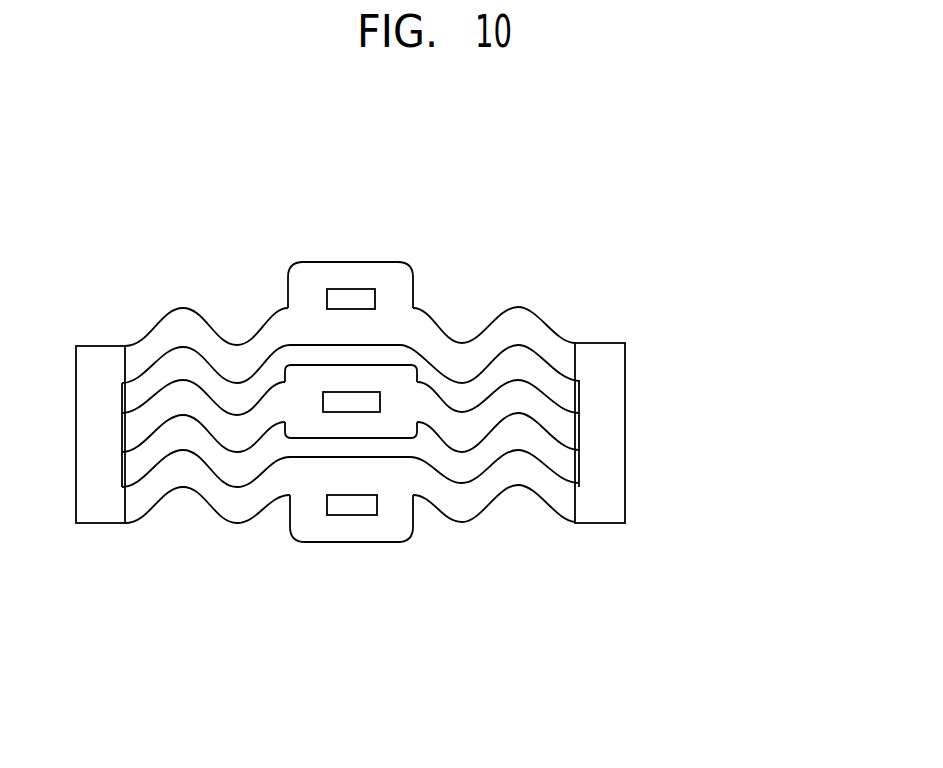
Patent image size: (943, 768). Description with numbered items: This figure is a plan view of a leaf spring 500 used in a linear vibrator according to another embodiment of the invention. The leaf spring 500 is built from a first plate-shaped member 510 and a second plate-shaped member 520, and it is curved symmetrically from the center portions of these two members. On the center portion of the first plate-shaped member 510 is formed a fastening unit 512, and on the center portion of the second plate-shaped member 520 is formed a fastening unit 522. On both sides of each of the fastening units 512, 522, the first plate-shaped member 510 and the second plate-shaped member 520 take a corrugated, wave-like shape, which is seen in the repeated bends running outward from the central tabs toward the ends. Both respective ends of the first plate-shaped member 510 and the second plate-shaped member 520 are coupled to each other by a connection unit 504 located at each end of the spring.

The leaf spring 500 is at (663, 202).
The connection unit 504 is at (610, 432).
The first plate-shaped member 510 is at (540, 408).
The fastening unit 512 is at (327, 377).
The second plate-shaped member 520 is at (518, 328).
The fastening unit 522 is at (348, 268).